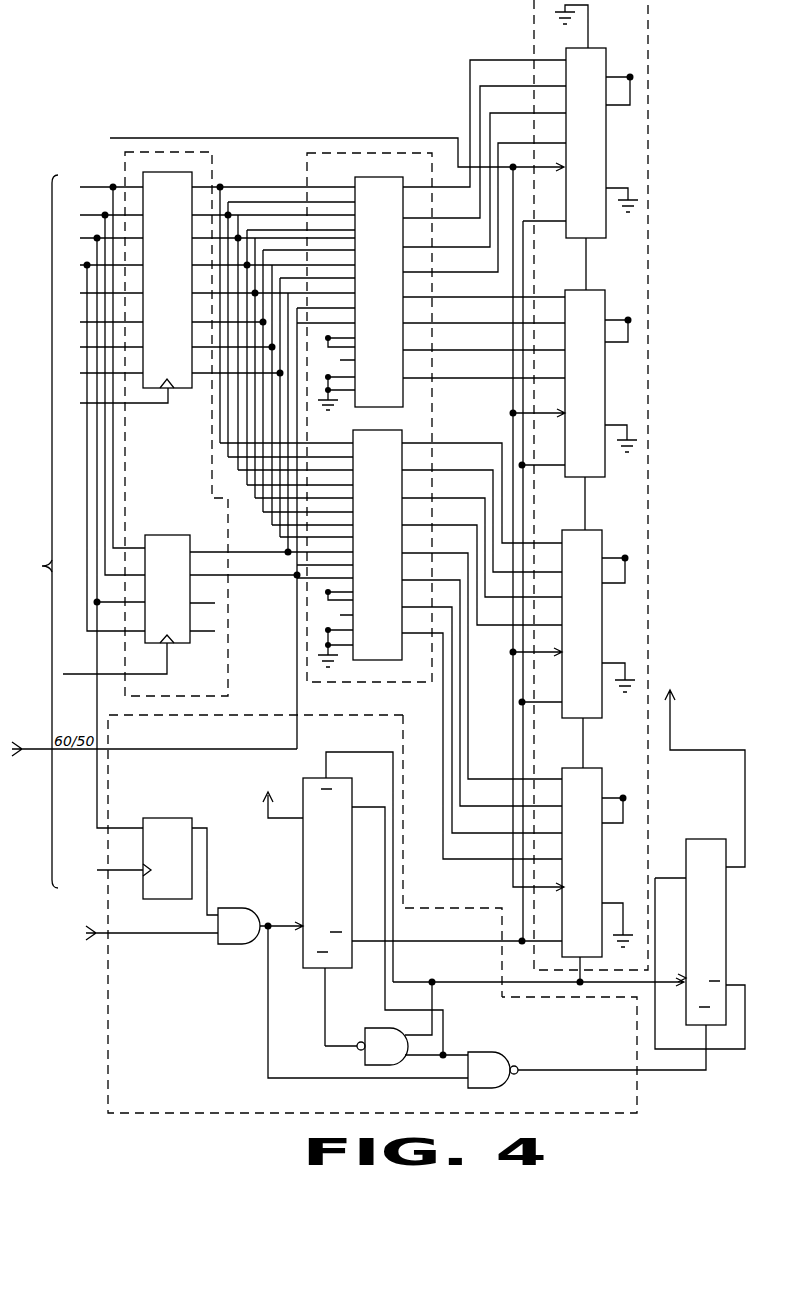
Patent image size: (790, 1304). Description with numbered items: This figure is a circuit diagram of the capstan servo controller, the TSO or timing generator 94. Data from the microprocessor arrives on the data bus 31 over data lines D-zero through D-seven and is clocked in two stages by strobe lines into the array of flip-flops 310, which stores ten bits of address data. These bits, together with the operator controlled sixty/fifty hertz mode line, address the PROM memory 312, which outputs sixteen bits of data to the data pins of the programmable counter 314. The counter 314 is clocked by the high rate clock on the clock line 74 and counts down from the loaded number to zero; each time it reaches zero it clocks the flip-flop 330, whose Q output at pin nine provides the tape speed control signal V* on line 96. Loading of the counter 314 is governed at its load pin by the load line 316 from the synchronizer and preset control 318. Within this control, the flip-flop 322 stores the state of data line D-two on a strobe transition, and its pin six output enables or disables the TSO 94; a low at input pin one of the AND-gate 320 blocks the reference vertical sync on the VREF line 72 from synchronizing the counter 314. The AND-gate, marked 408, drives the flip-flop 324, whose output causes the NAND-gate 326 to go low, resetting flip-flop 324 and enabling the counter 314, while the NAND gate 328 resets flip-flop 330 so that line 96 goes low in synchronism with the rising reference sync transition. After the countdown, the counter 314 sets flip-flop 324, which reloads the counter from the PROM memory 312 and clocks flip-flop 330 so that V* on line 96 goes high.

The data bus 31 is at (52, 621).
The 128H line 74 is at (170, 138).
The TSO (timing generator) 94 is at (684, 327).
The array of flip-flops 310 is at (228, 653).
The PROM memory 312 is at (385, 153).
The programmable counter 314 is at (651, 145).
The load line 316 is at (441, 945).
The synchronizer and preset control 318 is at (108, 992).
The AND-gate 320 is at (237, 908).
The flip-flop 322 is at (170, 818).
The flip-flop 324 is at (313, 778).
The NAND-gate 326 is at (365, 1058).
The NAND gate 328 is at (506, 1086).
The flip-flop 330 is at (701, 839).
The AND gate B7 408 is at (246, 944).
The VREF line 72 is at (176, 934).
The V* line 96 is at (742, 858).